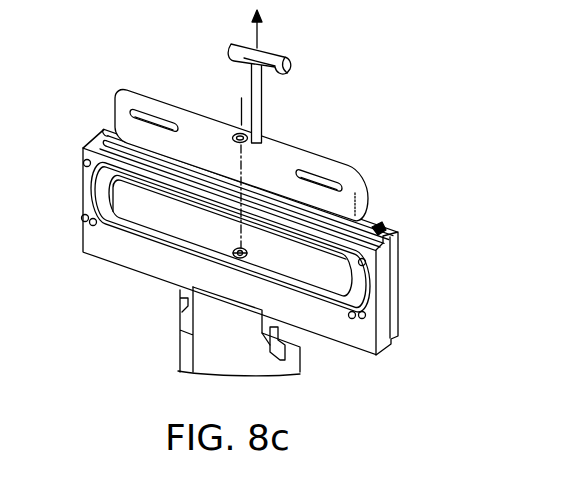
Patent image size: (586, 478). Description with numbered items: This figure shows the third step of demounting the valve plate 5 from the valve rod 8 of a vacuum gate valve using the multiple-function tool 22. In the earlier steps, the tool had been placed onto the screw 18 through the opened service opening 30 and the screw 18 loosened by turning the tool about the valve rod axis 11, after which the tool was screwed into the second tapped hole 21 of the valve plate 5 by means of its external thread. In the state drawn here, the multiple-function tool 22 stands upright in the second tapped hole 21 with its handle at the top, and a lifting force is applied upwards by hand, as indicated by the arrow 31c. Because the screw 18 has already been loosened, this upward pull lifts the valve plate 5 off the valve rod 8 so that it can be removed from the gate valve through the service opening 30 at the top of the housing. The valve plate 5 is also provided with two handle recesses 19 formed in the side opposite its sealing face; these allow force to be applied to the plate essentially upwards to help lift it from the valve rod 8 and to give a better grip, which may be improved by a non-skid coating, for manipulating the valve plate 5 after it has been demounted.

The valve plate 5 is at (116, 124).
The valve rod 8 is at (240, 255).
The valve rod axis 11 is at (240, 118).
The screw 18 is at (237, 144).
The handle recesses 19 is at (342, 184).
The second tapped hole 21 is at (272, 140).
The multiple-function tool 22 is at (290, 63).
The service opening 30 is at (376, 230).
The arrow 31c is at (252, 33).